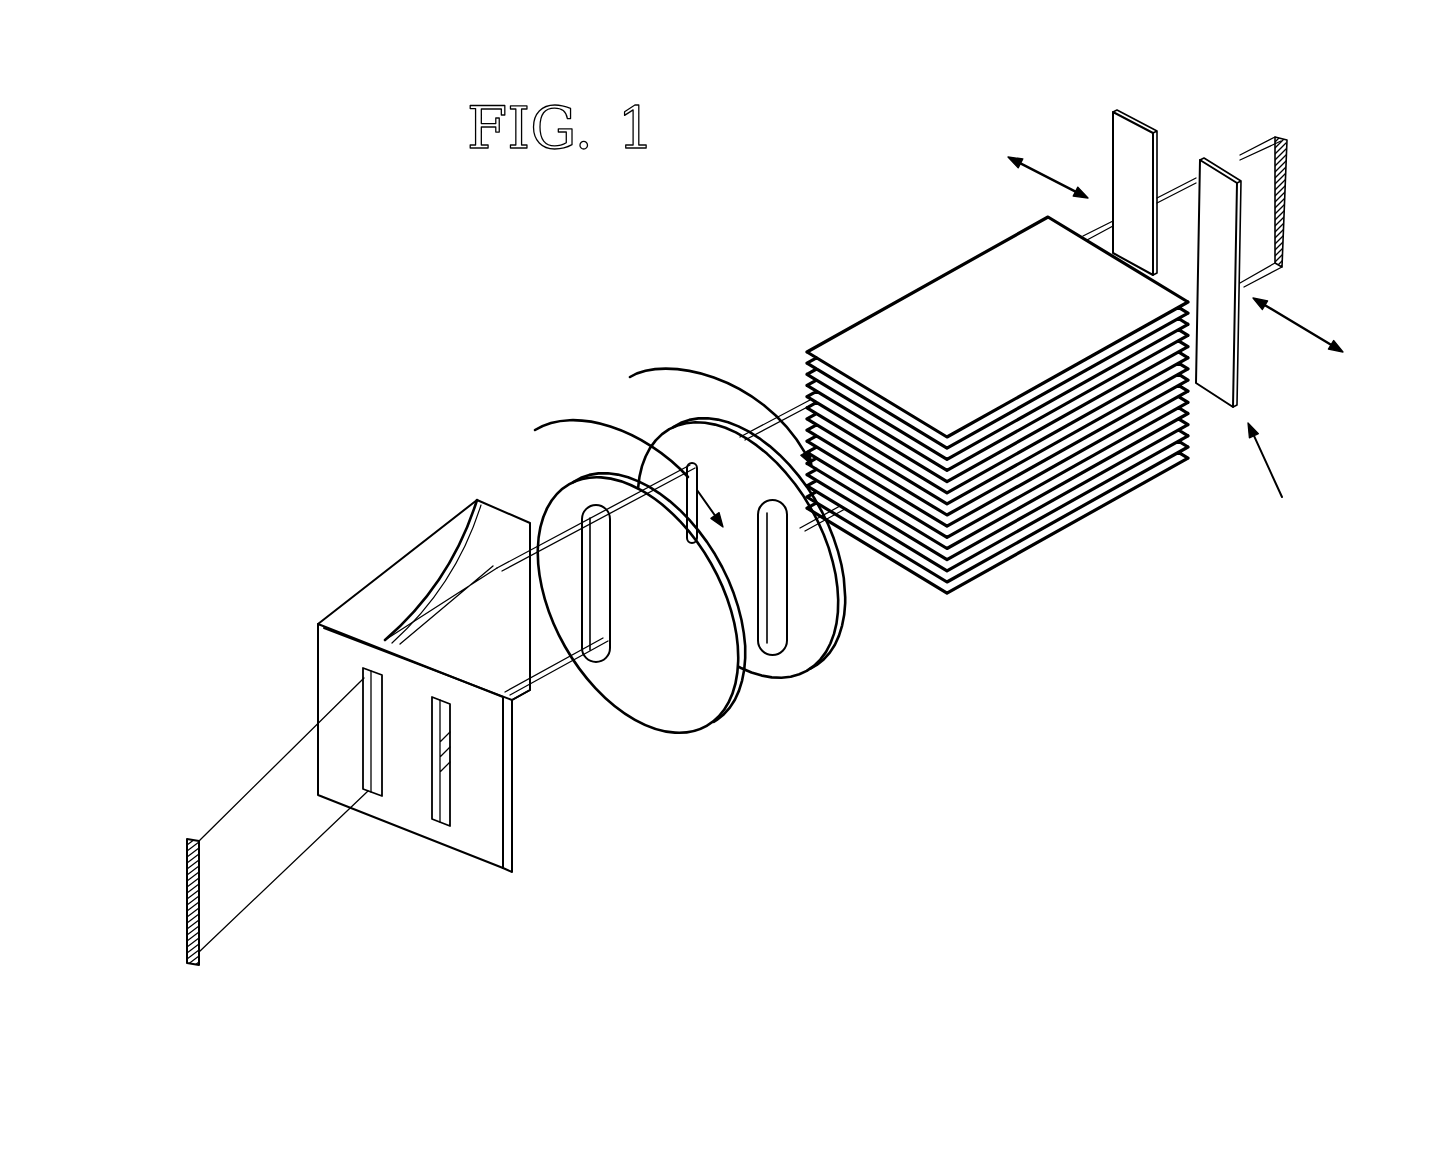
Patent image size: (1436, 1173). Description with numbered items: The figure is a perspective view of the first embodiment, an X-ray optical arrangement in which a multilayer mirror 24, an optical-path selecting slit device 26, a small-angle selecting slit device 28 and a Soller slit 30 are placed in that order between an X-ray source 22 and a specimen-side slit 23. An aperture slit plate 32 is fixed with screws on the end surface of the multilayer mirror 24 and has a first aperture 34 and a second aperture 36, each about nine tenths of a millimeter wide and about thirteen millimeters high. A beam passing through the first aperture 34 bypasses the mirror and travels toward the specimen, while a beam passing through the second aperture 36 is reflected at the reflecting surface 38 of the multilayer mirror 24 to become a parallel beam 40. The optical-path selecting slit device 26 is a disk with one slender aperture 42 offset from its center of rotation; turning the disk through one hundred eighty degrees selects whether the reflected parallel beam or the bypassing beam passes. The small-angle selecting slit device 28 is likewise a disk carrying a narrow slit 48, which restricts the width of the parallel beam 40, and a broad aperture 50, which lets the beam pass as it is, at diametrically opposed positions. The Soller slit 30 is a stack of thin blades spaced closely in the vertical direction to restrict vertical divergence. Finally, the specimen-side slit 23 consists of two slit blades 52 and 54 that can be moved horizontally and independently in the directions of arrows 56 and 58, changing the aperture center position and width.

The X-ray source 22 is at (199, 915).
The specimen-side slit 23 is at (1286, 484).
The multilayer mirror 24 is at (410, 565).
The optical-path selecting slit device 26 is at (713, 710).
The small-angle selecting slit device 28 is at (815, 672).
The Soller slit 30 is at (887, 340).
The aperture slit plate 32 is at (450, 855).
The first aperture 34 is at (446, 781).
The second aperture 36 is at (368, 735).
The reflecting surface 38 is at (500, 648).
The parallel beam 40 is at (495, 565).
The slender aperture 42 is at (600, 587).
The narrow slit 48 is at (692, 462).
The broad aperture 50 is at (775, 590).
The slit blade 52 is at (1240, 355).
The slit blade 54 is at (1110, 170).
The arrow 56 is at (1297, 322).
The arrow 58 is at (1042, 178).